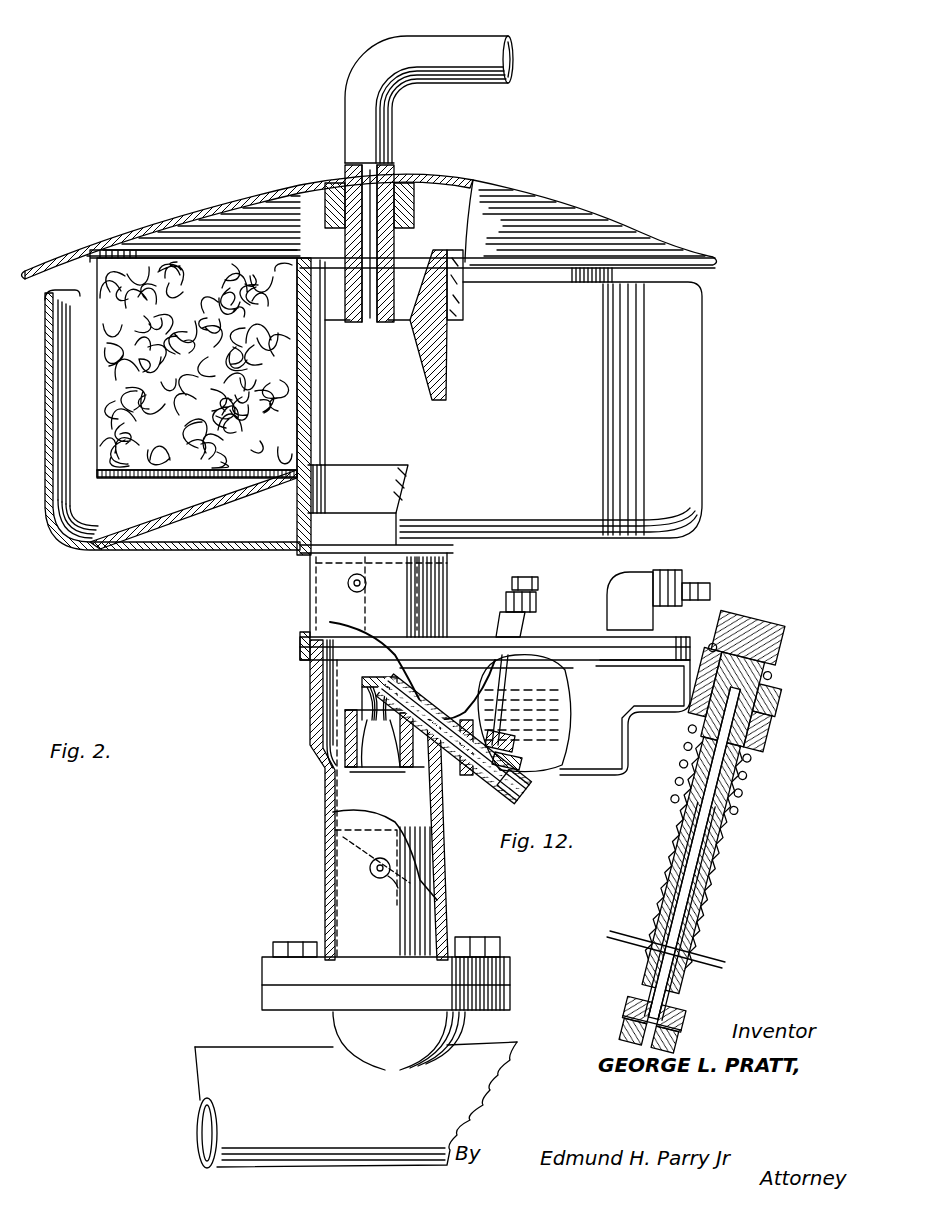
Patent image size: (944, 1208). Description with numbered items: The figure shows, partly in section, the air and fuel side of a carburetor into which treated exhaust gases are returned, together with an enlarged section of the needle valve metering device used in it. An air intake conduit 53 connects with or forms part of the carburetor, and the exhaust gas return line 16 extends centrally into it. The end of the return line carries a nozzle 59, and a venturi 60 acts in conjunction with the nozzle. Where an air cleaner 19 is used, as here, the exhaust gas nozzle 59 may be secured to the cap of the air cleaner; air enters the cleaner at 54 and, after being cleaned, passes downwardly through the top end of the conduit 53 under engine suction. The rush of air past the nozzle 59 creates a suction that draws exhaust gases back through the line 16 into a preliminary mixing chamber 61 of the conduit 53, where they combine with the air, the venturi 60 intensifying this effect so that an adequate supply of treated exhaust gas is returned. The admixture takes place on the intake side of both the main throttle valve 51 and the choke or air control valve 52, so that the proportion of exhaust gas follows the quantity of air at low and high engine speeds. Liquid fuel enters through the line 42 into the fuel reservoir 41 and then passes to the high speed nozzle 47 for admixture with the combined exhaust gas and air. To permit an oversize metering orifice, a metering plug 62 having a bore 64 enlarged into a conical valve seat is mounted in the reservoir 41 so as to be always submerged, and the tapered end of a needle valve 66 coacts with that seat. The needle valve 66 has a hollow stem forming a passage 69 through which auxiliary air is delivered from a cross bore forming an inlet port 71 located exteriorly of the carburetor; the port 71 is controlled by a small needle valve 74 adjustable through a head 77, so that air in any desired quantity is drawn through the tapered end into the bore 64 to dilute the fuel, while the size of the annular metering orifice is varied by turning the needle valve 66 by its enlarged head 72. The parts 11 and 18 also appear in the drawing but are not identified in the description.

In FIG. 2, the pipe 11 is at (505, 1056).
In FIG. 2, the exhaust gas return line 16 is at (492, 78).
In FIG. 2, the housing 18 is at (313, 745).
In FIG. 2, the air cleaner 19 is at (686, 420).
In FIG. 2, the fuel reservoir 41 is at (515, 790).
In FIG. 2, the fuel line 42 is at (690, 586).
In FIG. 2, the high speed nozzle 47 is at (362, 690).
In FIG. 2, the main throttle valve 51 is at (420, 880).
In FIG. 2, the choke or air control valve 52 is at (430, 558).
In FIG. 2, the air intake conduit 53 is at (300, 545).
In FIG. 2, the air inlet of the air cleaner 54 is at (62, 262).
In FIG. 2, the nozzle 59 is at (400, 262).
In FIG. 2, the venturi 60 is at (312, 357).
In FIG. 2, the preliminary mixing chamber 61 is at (410, 420).
In FIG. 2, the metering plug 62 is at (516, 740).
In FIG. 12, the metering plug 62 is at (625, 1008).
In FIG. 2, the bore 64 is at (440, 200).
In FIG. 12, the bore 64 is at (670, 1022).
In FIG. 2, the needle valve 66 is at (535, 700).
In FIG. 12, the needle valve 66 is at (658, 922).
In FIG. 12, the passage 69 is at (670, 862).
In FIG. 2, the inlet port 71 is at (526, 616).
In FIG. 12, the inlet port 71 is at (748, 757).
In FIG. 2, the enlarged head 72 is at (505, 600).
In FIG. 12, the enlarged head 72 is at (760, 722).
In FIG. 12, the small needle valve 74 is at (755, 690).
In FIG. 2, the head 77 is at (538, 585).
In FIG. 12, the head 77 is at (760, 630).